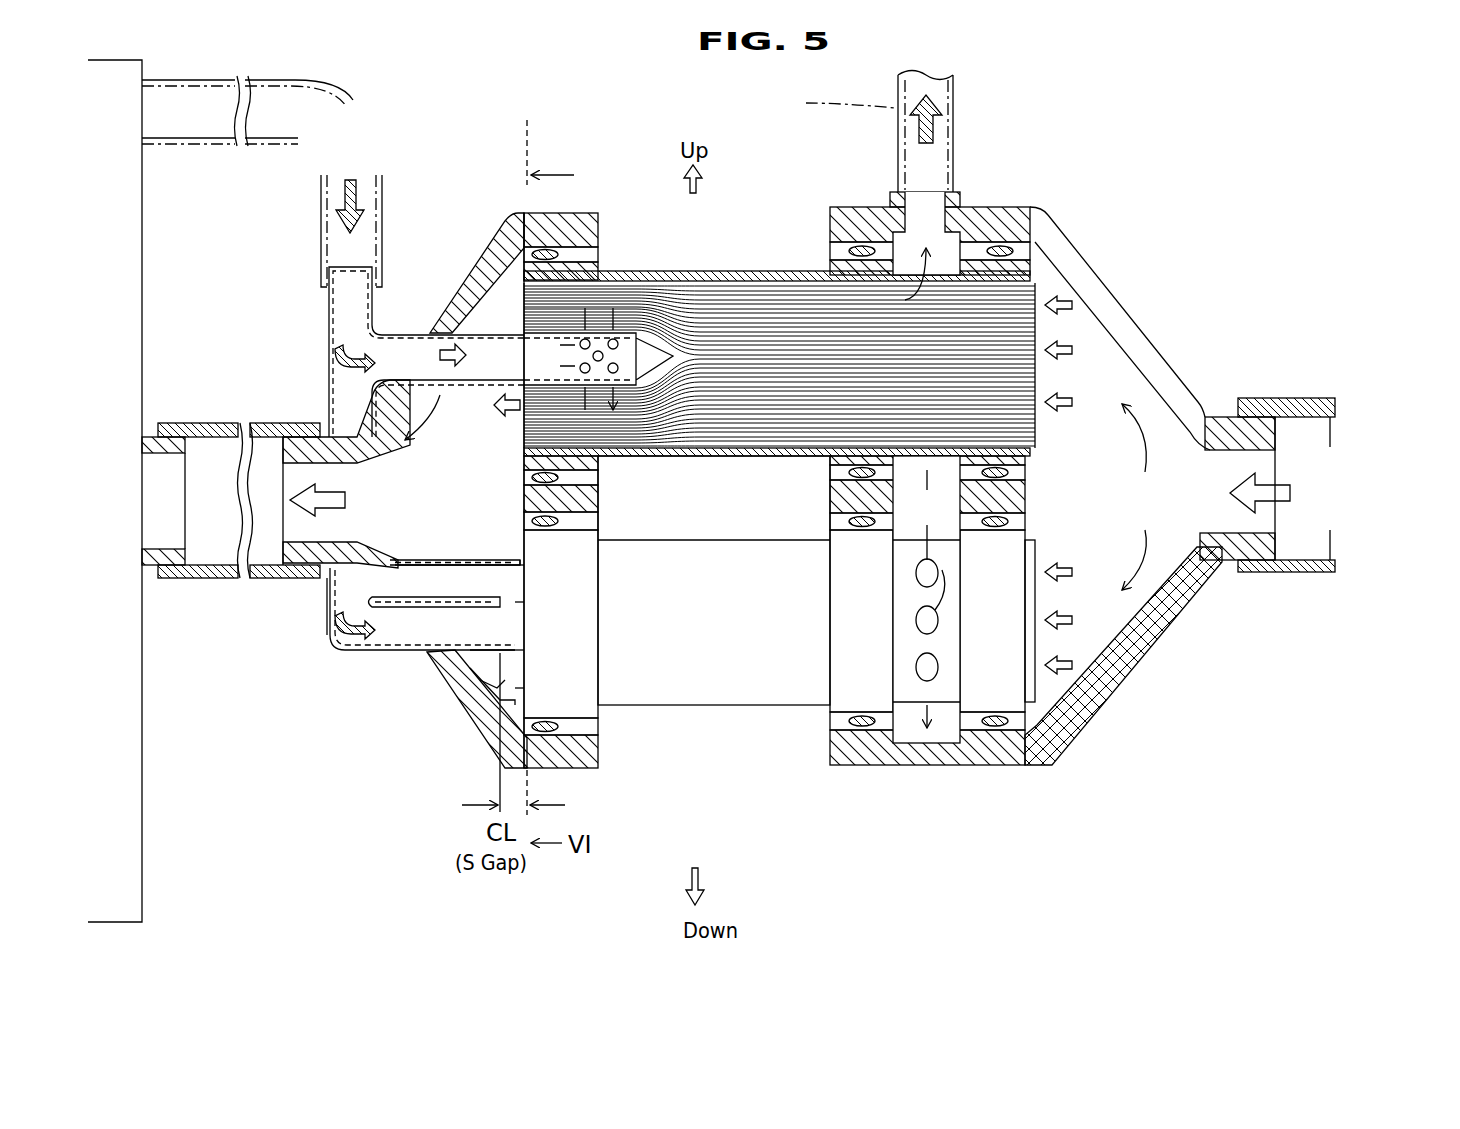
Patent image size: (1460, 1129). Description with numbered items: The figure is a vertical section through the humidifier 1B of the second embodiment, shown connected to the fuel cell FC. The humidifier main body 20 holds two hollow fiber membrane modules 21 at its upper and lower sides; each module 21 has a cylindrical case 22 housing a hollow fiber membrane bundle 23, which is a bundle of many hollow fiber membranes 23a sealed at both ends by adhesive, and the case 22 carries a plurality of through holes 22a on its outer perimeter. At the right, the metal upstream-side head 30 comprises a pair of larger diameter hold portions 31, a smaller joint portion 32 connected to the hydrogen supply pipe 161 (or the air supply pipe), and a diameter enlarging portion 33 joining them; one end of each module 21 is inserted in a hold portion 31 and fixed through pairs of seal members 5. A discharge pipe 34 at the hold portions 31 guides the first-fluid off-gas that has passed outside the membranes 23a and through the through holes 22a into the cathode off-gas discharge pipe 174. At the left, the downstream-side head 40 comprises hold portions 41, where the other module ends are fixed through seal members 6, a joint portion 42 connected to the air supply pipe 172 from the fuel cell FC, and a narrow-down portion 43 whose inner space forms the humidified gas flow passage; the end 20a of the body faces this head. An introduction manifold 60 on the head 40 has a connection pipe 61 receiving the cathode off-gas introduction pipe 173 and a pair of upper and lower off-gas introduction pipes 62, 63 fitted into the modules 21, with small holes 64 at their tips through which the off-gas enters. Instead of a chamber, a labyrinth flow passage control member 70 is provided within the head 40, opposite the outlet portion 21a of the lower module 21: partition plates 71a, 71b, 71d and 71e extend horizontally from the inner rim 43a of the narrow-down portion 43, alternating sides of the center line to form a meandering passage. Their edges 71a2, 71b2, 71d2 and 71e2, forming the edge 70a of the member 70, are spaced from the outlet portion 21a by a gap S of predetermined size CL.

The humidifier 1B is at (1094, 178).
The seal member 5 is at (866, 246).
The seal member 6 is at (547, 250).
The humidifier main body 20 is at (684, 727).
The end 20a is at (528, 172).
The hollow fiber membrane module 21 is at (734, 270).
The outlet portion 21a is at (506, 706).
The case 22 is at (654, 548).
The through hole 22a is at (934, 683).
The hollow fiber membrane bundle 23 is at (1036, 290).
The hollow fiber membrane 23a is at (1036, 318).
The upstream-side head 30 is at (1130, 306).
The hold portion 31 is at (846, 230).
The joint portion 32 is at (1222, 563).
The diameter enlarging portion 33 is at (1132, 652).
The discharge pipe 34 is at (955, 186).
The downstream-side head 40 is at (477, 260).
The hold portion 41 is at (588, 234).
The joint portion 42 is at (306, 436).
The narrow-down portion 43 is at (466, 298).
The inner rim 43a is at (388, 612).
The introduction manifold 60 is at (324, 596).
The connection pipe 61 is at (328, 296).
The off-gas introduction pipe 62 is at (410, 334).
The off-gas introduction pipe 63 is at (331, 626).
The small hole 64 is at (604, 350).
The flow passage control member 70 is at (424, 551).
The edge 70a is at (495, 561).
The partition plate 71a is at (496, 689).
The edge 71a2 is at (520, 688).
The partition plate 71b is at (470, 655).
The edge 71b2 is at (520, 656).
The partition plate 71d is at (394, 564).
The edge 71d2 is at (520, 596).
The partition plate 71e is at (500, 560).
The edge 71e2 is at (520, 565).
The hydrogen supply pipe 161 is at (1263, 396).
The air supply pipe 172 is at (220, 422).
The cathode off-gas introduction pipe 173 is at (318, 218).
The cathode off-gas discharge pipe 174 is at (817, 100).
The fuel cell FC is at (152, 864).